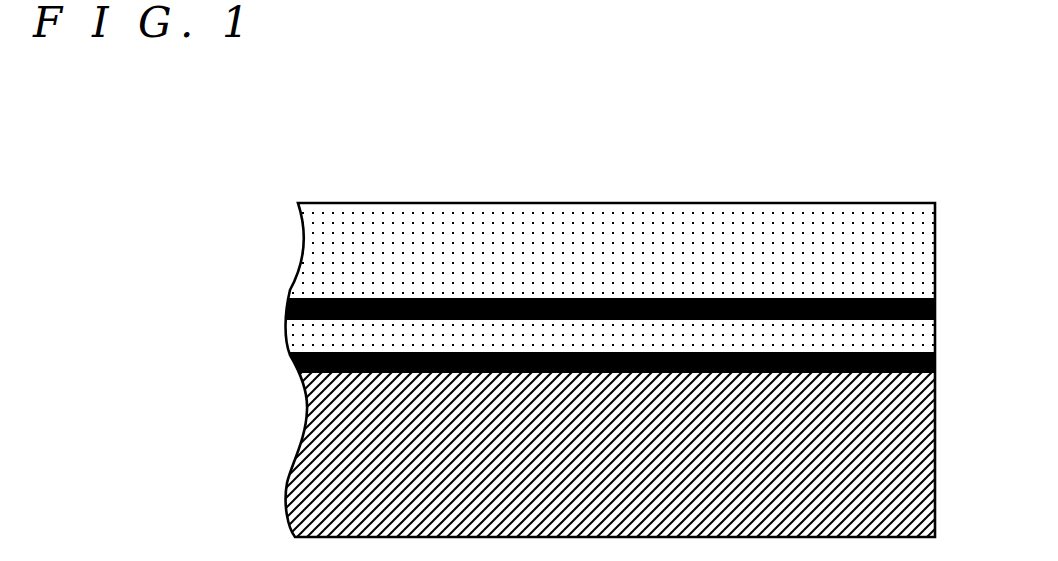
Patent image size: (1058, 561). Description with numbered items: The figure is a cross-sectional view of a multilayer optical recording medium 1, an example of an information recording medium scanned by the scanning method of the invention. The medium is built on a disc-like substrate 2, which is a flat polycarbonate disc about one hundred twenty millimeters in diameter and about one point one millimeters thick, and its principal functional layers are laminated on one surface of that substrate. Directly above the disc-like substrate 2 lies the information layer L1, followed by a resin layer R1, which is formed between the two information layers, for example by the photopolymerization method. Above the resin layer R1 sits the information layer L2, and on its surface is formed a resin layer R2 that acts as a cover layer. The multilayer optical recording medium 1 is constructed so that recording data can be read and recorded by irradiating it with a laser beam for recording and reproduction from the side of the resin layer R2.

The multilayer optical recording medium 1 is at (623, 152).
The disc-like substrate 2 is at (307, 448).
The information layer L1 is at (288, 362).
The resin layer R1 is at (311, 337).
The information layer L2 is at (286, 305).
The resin layer R2 is at (320, 248).